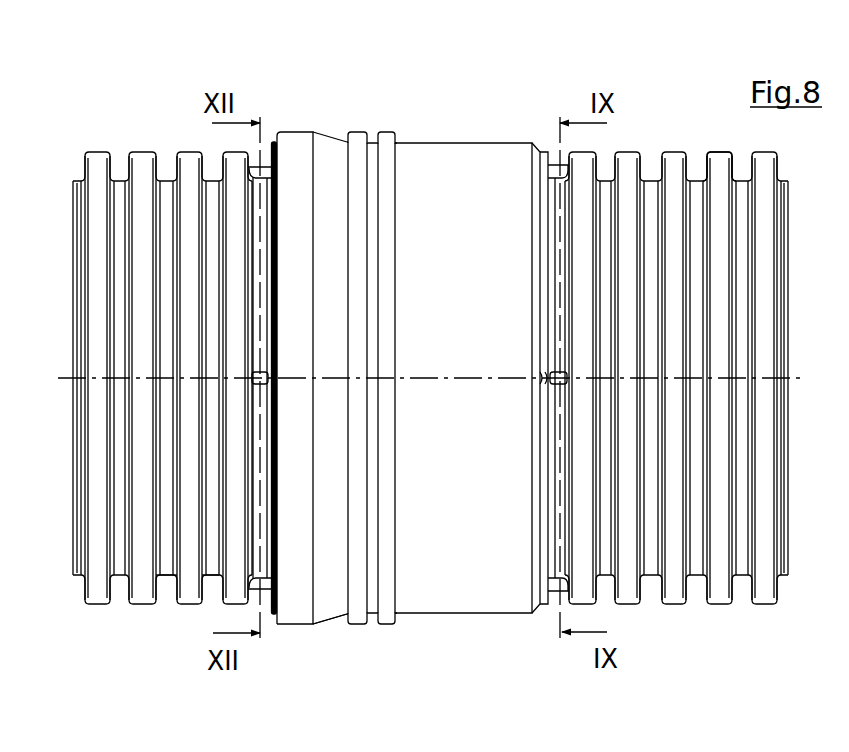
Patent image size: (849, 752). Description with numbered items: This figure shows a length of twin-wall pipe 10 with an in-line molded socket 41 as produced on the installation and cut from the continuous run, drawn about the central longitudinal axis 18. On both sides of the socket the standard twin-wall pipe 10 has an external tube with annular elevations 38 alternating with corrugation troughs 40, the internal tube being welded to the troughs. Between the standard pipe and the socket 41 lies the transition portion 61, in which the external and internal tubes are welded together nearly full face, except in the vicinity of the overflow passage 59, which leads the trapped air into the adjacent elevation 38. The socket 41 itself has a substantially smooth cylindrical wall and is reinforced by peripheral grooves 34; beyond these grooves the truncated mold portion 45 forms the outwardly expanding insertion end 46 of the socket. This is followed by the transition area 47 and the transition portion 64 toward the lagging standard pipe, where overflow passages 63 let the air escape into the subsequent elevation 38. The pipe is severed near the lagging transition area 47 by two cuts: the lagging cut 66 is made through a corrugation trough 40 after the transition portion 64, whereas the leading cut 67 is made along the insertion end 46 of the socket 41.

The twin-wall pipe 10 is at (118, 134).
The annular elevations 38 is at (717, 162).
The corrugation troughs 40 is at (212, 594).
The cut 66 is at (166, 638).
The transition portion 64 is at (272, 628).
The transition area 47 is at (266, 164).
The insertion end 46 is at (298, 131).
The truncated mold portion 45 is at (335, 136).
The cut 67 is at (328, 631).
The peripheral grooves 34 is at (386, 131).
The pipe socket 41 is at (451, 141).
The transition portion 61 is at (551, 164).
The overflow passages 63 is at (273, 372).
The overflow passage 59 is at (540, 372).
The central longitudinal axis 18 is at (458, 380).